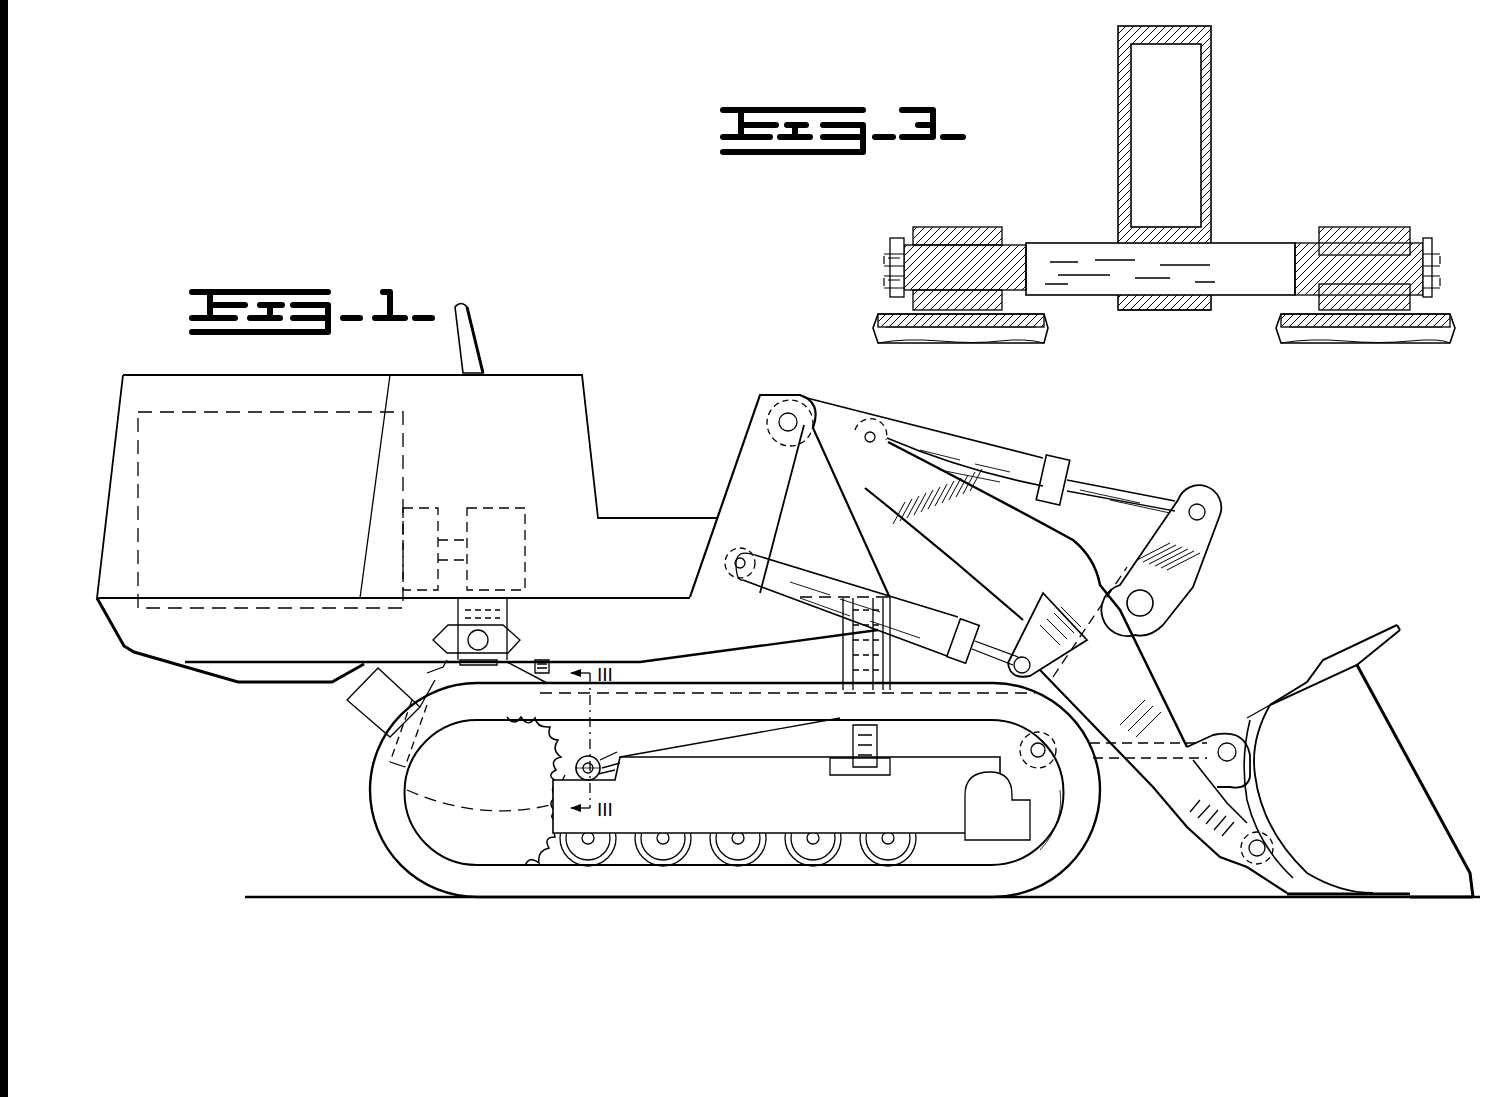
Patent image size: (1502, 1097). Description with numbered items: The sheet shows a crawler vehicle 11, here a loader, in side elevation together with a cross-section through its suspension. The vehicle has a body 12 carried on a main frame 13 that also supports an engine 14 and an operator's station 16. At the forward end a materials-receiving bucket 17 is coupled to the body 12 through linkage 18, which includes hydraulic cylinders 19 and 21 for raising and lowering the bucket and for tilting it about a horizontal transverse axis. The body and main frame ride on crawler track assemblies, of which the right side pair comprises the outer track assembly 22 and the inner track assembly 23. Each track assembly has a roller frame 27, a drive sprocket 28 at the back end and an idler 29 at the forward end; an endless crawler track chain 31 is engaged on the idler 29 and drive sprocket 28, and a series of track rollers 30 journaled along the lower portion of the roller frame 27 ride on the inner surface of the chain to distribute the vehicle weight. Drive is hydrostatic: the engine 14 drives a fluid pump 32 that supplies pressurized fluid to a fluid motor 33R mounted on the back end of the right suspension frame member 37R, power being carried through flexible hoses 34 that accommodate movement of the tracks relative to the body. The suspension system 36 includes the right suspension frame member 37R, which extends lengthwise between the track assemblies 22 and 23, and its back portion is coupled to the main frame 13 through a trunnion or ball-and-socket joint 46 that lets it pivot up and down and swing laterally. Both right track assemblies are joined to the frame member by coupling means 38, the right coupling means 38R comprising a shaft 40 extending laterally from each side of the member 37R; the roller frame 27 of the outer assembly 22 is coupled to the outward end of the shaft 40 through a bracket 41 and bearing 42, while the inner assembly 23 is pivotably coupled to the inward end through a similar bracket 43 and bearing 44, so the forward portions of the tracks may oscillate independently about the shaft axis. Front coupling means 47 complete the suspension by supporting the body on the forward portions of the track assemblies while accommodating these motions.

In FIG. 1, the crawler vehicle 11 is at (596, 315).
In FIG. 1, the body 12 is at (542, 441).
In FIG. 1, the main frame 13 is at (157, 667).
In FIG. 1, the engine 14 is at (167, 410).
In FIG. 1, the operator's station 16 is at (478, 347).
In FIG. 1, the materials-receiving bucket 17 is at (1362, 818).
In FIG. 1, the linkage 18 is at (1202, 584).
In FIG. 1, the hydraulic cylinder 19 is at (797, 573).
In FIG. 1, the hydraulic cylinder 21 is at (940, 445).
In FIG. 3, the crawler track assembly 22 is at (1025, 357).
In FIG. 3, the crawler track assembly 23 is at (1338, 355).
In FIG. 3, the roller frame 27 is at (878, 336).
In FIG. 1, the roller frame 27 is at (780, 815).
In FIG. 1, the drive sprocket 28 is at (430, 833).
In FIG. 1, the idler 29 is at (1055, 800).
In FIG. 1, the track rollers 30 is at (912, 832).
In FIG. 1, the endless crawler track chain 31 is at (1088, 833).
In FIG. 1, the fluid pump 32 is at (538, 535).
In FIG. 1, the fluid motor 33R is at (377, 708).
In FIG. 1, the flexible hoses 34 is at (548, 667).
In FIG. 1, the suspension system 36 is at (420, 670).
In FIG. 3, the right suspension frame member 37R is at (1214, 94).
In FIG. 3, the coupling means 38 is at (1280, 158).
In FIG. 1, the coupling means 38R is at (616, 778).
In FIG. 3, the shaft 40 is at (1270, 285).
In FIG. 1, the shaft 40 is at (597, 757).
In FIG. 3, the bracket 41 is at (925, 230).
In FIG. 1, the bracket 41 is at (545, 791).
In FIG. 3, the bearing 42 is at (965, 245).
In FIG. 3, the bracket 43 is at (1380, 229).
In FIG. 3, the bearing 44 is at (1343, 253).
In FIG. 1, the trunnion or ball-and-socket joint 46 is at (450, 640).
In FIG. 1, the front coupling means 47 is at (833, 663).